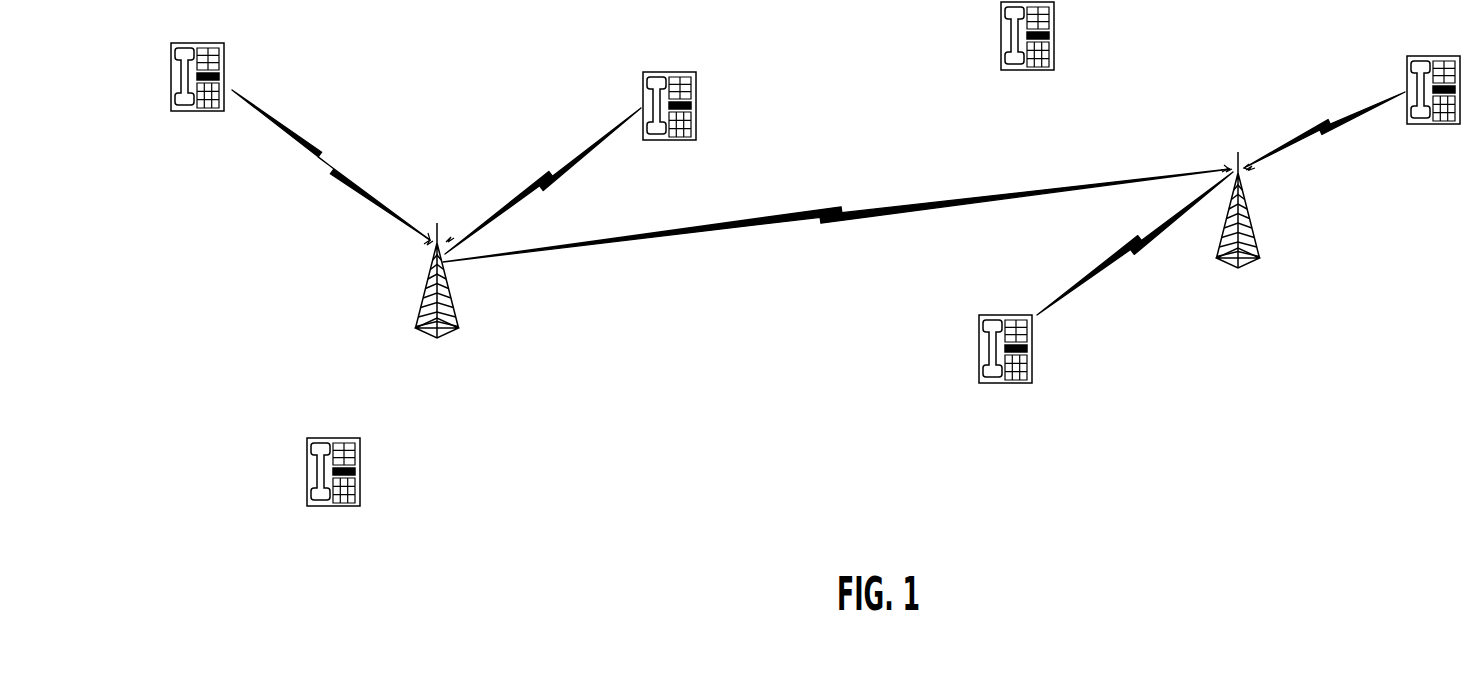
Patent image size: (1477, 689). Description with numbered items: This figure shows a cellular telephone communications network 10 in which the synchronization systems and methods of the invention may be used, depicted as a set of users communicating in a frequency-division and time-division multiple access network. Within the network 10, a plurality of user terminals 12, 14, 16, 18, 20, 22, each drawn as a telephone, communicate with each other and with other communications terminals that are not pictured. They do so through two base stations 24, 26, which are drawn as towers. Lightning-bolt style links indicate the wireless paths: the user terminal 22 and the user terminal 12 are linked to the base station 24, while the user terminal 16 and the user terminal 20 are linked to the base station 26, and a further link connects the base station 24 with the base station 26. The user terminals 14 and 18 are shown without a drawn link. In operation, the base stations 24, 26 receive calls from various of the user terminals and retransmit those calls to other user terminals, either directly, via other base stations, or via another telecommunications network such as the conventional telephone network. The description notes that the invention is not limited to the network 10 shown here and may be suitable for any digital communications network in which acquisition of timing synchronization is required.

The cellular telephone communications network 10 is at (815, 301).
The user terminal 12 is at (684, 200).
The user terminal 14 is at (346, 566).
The user terminal 16 is at (1019, 443).
The user terminal 18 is at (1040, 130).
The user terminal 20 is at (1445, 185).
The user terminal 22 is at (210, 171).
The base station 24 is at (449, 402).
The base station 26 is at (1250, 332).